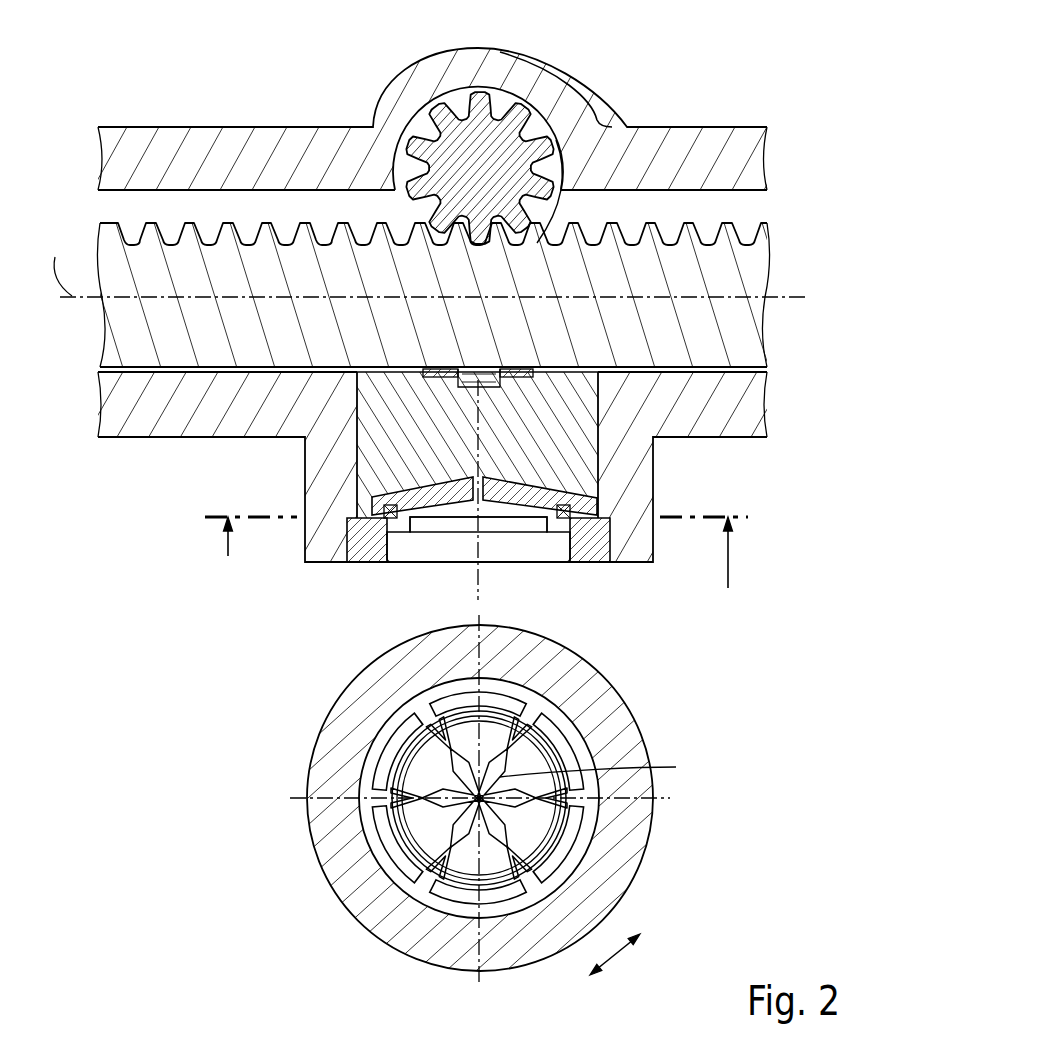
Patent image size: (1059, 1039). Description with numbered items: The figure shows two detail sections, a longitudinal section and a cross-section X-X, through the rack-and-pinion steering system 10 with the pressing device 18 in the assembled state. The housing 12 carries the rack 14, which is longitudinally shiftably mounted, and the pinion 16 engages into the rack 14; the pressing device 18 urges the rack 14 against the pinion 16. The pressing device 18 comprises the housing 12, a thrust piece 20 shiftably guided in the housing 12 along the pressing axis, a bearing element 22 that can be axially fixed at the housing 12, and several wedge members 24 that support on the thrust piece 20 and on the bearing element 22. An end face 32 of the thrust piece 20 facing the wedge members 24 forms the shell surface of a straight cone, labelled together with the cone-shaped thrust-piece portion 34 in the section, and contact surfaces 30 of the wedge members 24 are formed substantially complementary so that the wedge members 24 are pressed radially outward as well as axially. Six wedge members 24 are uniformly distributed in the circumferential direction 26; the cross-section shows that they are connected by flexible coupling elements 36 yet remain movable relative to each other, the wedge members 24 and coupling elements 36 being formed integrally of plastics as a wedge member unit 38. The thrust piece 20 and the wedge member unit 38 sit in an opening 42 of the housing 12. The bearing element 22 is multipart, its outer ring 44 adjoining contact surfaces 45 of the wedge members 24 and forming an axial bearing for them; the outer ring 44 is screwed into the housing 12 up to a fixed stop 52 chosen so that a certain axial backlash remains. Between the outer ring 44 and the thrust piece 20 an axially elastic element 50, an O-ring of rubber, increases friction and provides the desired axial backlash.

The rack-and-pinion steering system 10 is at (660, 87).
The housing 12 is at (490, 678).
The rack 14 is at (764, 285).
The pinion 16 is at (506, 116).
The pressing device 18 is at (636, 582).
The thrust piece 20 is at (382, 445).
The bearing element 22 is at (227, 511).
The wedge members 24 is at (453, 681).
The circumferential direction 26 is at (615, 966).
The contact surfaces 30 is at (508, 518).
The end face 32 is at (617, 480).
The disc spring part 34 is at (550, 490).
The coupling elements 36 is at (523, 847).
The wedge member unit 38 is at (390, 483).
The opening 42 is at (334, 584).
The outer ring 44 is at (370, 540).
The contact surfaces 45 is at (578, 518).
The elastic element 50 is at (530, 884).
The stop 52 is at (604, 500).